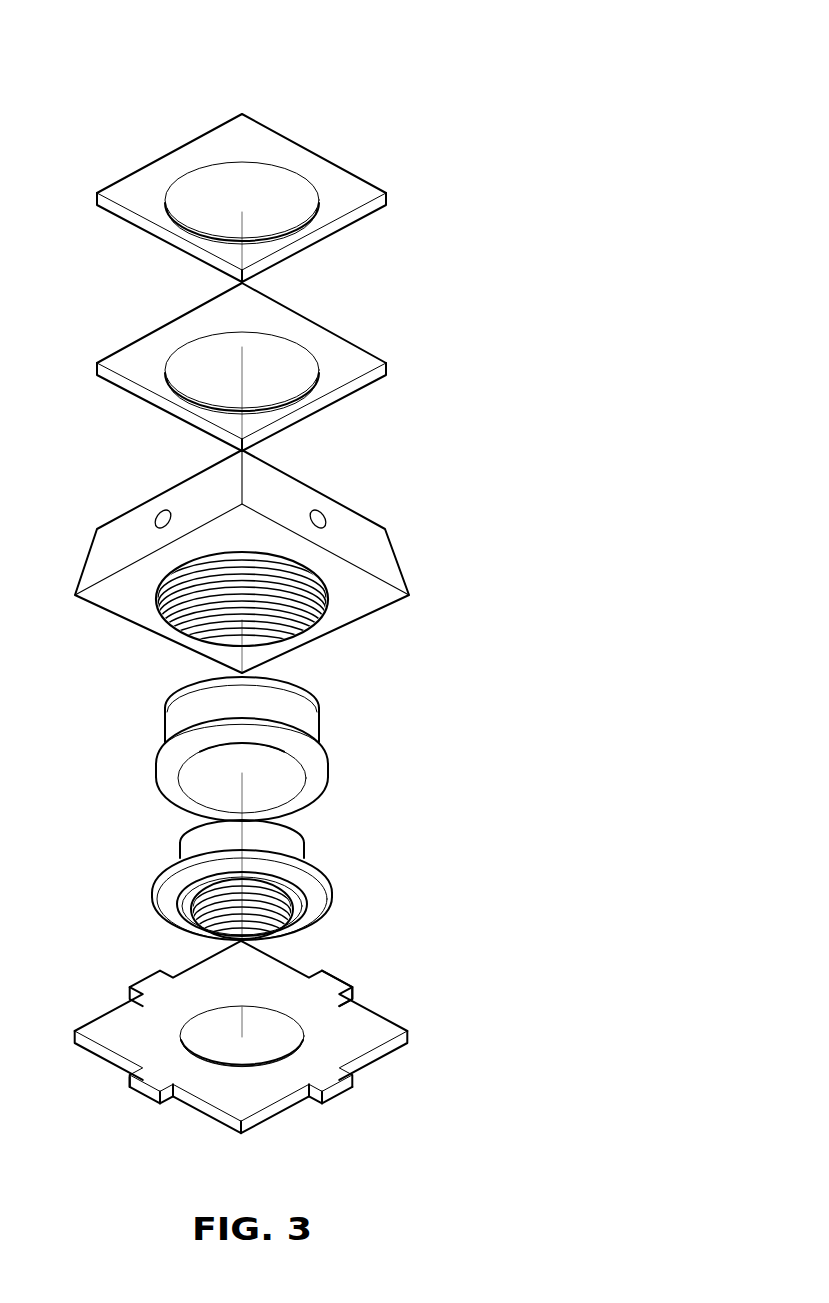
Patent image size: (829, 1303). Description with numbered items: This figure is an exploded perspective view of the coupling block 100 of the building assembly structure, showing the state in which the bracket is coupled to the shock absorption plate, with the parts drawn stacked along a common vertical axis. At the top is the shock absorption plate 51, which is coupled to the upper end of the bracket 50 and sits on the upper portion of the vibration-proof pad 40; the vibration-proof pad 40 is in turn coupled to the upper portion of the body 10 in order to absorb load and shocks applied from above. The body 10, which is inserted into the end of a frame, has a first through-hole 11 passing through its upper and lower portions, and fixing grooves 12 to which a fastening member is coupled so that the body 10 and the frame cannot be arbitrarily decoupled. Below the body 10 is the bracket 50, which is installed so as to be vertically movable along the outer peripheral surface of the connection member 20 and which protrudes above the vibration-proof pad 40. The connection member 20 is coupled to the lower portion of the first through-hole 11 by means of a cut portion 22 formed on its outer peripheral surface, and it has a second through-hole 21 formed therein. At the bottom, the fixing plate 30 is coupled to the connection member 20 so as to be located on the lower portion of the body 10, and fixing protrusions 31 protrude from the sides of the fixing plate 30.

The coupling block 100 is at (344, 122).
The shock absorption plate 51 is at (349, 177).
The vibration-proof pad 40 is at (352, 350).
The body 10 is at (377, 555).
The fixing groove 12 is at (155, 520).
The first through-hole 11 is at (307, 615).
The bracket 50 is at (308, 728).
The connection member 20 is at (262, 881).
The cut portion 22 is at (300, 853).
The second through-hole 21 is at (210, 920).
The fixing plate 30 is at (363, 1037).
The fixing protrusions 31 is at (332, 982).